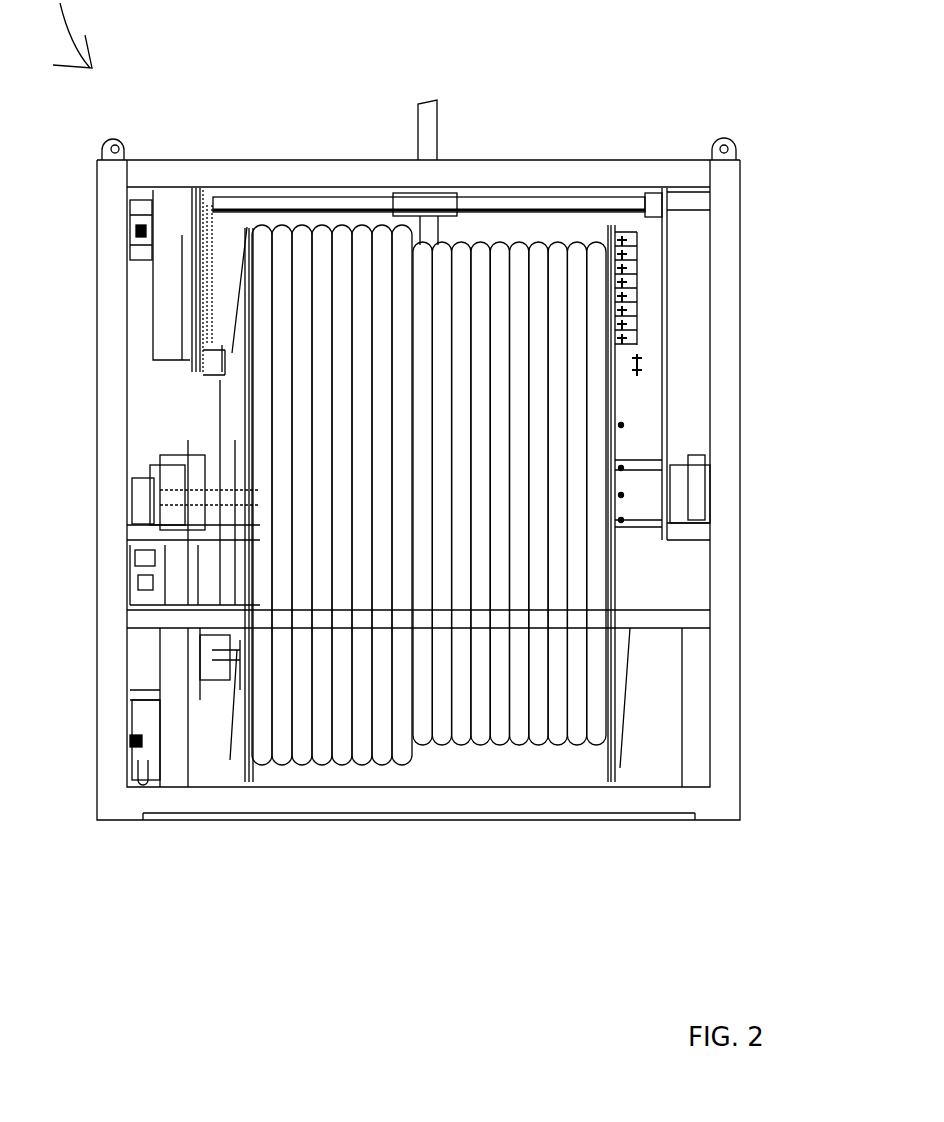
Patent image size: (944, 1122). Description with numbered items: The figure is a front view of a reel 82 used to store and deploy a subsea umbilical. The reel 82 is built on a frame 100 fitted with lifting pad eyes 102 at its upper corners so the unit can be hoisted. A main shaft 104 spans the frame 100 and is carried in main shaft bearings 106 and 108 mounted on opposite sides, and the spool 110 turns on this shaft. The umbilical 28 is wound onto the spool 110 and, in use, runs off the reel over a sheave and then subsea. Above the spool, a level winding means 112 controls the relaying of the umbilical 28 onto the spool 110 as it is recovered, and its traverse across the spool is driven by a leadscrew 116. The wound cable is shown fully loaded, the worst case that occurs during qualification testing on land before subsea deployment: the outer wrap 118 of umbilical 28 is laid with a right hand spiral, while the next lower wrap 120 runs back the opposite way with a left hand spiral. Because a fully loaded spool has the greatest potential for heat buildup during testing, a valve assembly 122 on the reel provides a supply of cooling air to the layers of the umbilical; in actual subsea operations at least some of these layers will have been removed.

The umbilical 28 is at (440, 120).
The reel 82 is at (745, 218).
The frame 100 is at (735, 337).
The lifting pad eyes 102 is at (740, 150).
The main shaft 104 is at (678, 490).
The main shaft bearing 106 is at (692, 517).
The main shaft bearing 108 is at (172, 482).
The spool 110 is at (618, 685).
The level winding means 112 is at (465, 192).
The leadscrew 116 is at (517, 215).
The outer wrap 118 is at (385, 757).
The next lower wrap 120 is at (497, 752).
The valve assembly 122 is at (637, 283).